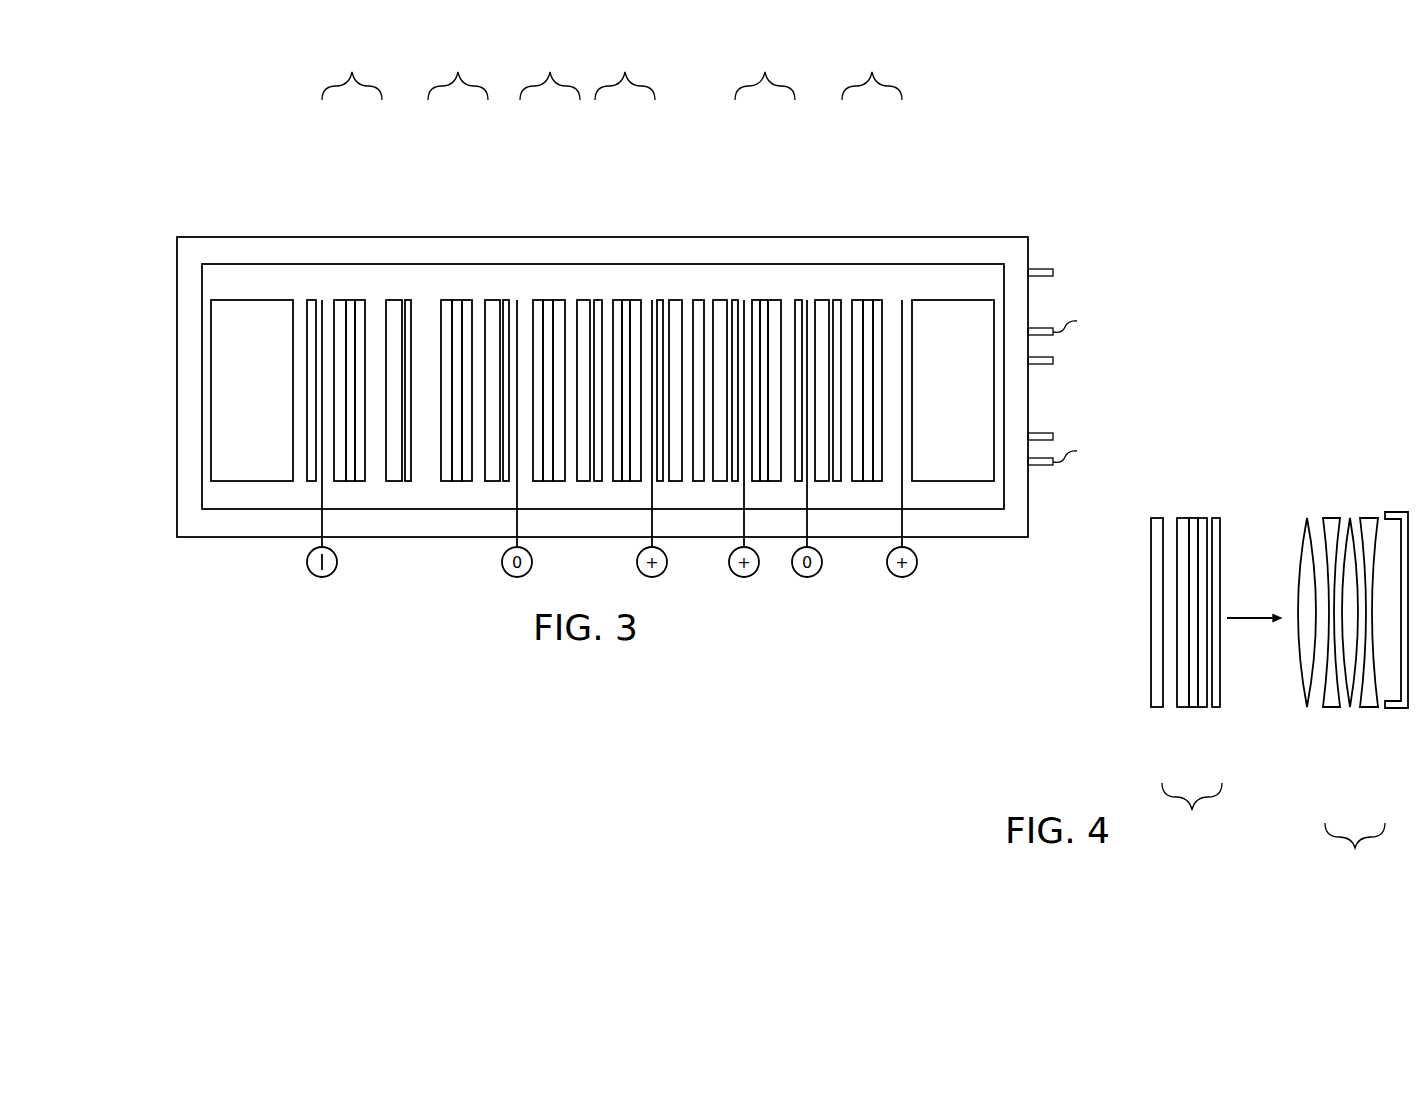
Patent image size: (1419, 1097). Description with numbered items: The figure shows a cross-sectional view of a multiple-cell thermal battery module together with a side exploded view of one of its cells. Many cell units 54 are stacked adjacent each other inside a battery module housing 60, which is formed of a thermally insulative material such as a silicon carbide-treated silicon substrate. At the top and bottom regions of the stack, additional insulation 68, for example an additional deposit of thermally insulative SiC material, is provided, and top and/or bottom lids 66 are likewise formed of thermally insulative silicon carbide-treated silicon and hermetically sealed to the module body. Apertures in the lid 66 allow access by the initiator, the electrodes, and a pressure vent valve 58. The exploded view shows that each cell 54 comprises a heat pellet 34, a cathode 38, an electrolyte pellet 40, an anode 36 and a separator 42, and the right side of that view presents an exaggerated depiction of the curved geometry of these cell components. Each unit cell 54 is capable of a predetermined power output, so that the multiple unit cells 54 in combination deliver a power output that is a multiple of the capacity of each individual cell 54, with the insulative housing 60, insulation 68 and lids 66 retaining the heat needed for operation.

In FIG. 3, the heat pellet 34 is at (394, 300).
In FIG. 4, the heat pellet 34 is at (1153, 709).
In FIG. 3, the anode 36 is at (340, 300).
In FIG. 4, the anode 36 is at (1203, 709).
In FIG. 3, the cathode 38 is at (361, 300).
In FIG. 4, the cathode 38 is at (1182, 709).
In FIG. 3, the electrolyte pellet 40 is at (351, 300).
In FIG. 4, the electrolyte pellet 40 is at (1193, 709).
In FIG. 3, the separator 42 is at (312, 300).
In FIG. 4, the separator 42 is at (1216, 709).
In FIG. 3, the cell unit 54 is at (612, 72).
In FIG. 4, the cell unit 54 is at (1273, 830).
In FIG. 3, the pressure vent valve 58 is at (1038, 253).
In FIG. 3, the battery module housing 60 is at (272, 531).
In FIG. 3, the lid 66 is at (179, 366).
In FIG. 3, the additional insulation 68 is at (252, 307).